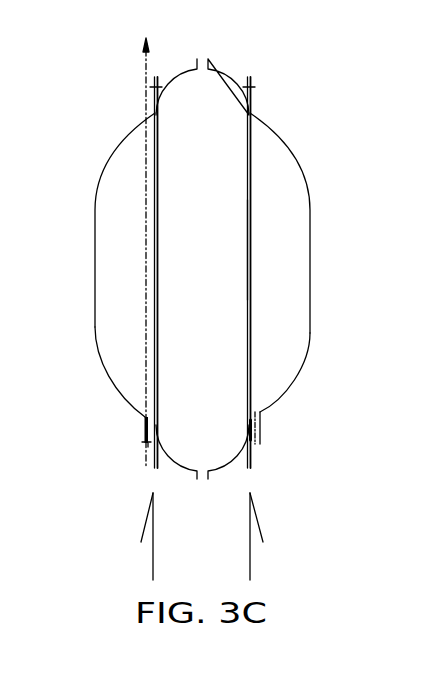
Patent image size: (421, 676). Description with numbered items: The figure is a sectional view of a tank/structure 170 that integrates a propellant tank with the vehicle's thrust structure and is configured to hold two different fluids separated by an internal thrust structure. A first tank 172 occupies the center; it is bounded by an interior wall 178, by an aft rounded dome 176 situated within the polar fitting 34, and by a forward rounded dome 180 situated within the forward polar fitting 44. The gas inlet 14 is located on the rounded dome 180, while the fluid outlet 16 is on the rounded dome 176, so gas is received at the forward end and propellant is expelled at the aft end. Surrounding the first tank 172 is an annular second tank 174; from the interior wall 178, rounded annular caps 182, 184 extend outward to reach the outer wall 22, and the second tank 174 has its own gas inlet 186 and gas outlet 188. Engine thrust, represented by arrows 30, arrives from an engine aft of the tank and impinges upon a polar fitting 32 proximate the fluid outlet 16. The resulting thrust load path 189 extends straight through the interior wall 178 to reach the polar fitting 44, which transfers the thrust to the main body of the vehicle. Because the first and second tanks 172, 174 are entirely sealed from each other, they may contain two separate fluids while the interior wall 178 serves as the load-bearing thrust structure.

The tank/structure 170 is at (84, 92).
The rounded dome 180 is at (182, 70).
The gas inlet 14 is at (205, 53).
The first tank 172 is at (217, 100).
The polar fitting 44 is at (253, 86).
The rounded annular cap 184 is at (283, 138).
The second tank 174 is at (282, 180).
The interior wall 178 is at (250, 253).
The outer wall 22 is at (310, 300).
The rounded annular cap 182 is at (288, 393).
The gas inlet 186 is at (258, 447).
The polar fitting 32 is at (250, 466).
The engine thrust 30 is at (252, 557).
The fluid outlet 16 is at (208, 479).
The rounded dome 176 is at (173, 463).
The thrust load path 189 is at (145, 303).
The polar fitting 34 is at (143, 433).
The gas outlet 188 is at (145, 447).